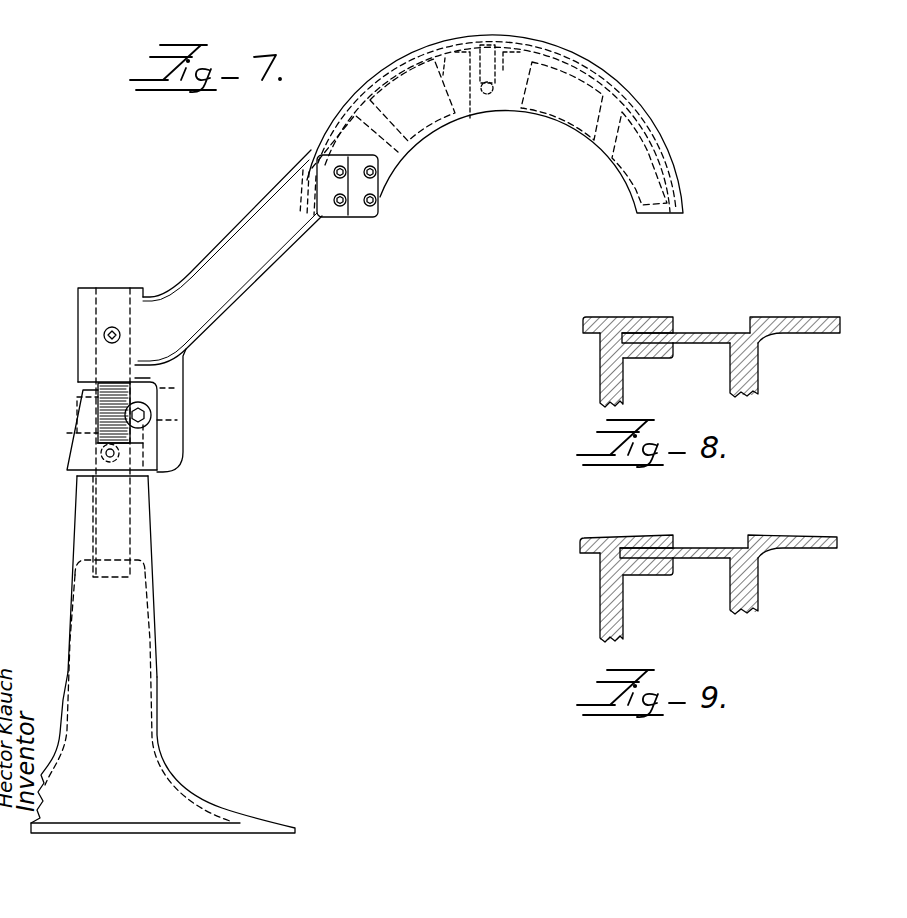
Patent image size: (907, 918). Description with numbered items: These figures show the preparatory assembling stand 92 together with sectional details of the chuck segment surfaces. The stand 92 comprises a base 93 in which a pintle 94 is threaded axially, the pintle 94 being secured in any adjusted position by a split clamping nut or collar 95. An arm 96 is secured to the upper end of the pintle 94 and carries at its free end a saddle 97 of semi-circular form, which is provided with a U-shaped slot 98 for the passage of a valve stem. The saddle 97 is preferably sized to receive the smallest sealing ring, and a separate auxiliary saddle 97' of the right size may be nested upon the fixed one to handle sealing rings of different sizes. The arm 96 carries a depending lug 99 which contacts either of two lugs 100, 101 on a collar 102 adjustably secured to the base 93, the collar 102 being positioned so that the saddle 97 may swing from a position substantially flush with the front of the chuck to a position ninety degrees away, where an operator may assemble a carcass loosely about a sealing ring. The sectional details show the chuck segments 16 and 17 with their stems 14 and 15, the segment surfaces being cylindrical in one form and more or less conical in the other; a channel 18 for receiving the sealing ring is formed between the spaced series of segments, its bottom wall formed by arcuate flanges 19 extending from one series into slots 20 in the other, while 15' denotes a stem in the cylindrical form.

In FIG. 8, the stem 14 is at (607, 378).
In FIG. 9, the stem 14 is at (604, 606).
In FIG. 9, the stem 15 is at (765, 586).
In FIG. 8, the right leg of rail section 15' is at (766, 370).
In FIG. 8, the chuck segment 16 is at (583, 324).
In FIG. 9, the chuck segment 16 is at (580, 552).
In FIG. 8, the chuck segment 17 is at (840, 325).
In FIG. 9, the chuck segment 17 is at (837, 547).
In FIG. 8, the channel 18 is at (703, 328).
In FIG. 9, the channel 18 is at (685, 540).
In FIG. 8, the arcuate flange 19 is at (689, 344).
In FIG. 9, the arcuate flange 19 is at (686, 560).
In FIG. 8, the slot 20 is at (643, 332).
In FIG. 9, the slot 20 is at (642, 548).
In FIG. 7, the preparatory assembling stand 92 is at (133, 598).
In FIG. 7, the base 93 is at (143, 543).
In FIG. 7, the pintle 94 is at (133, 510).
In FIG. 7, the split clamping nut or collar 95 is at (150, 410).
In FIG. 7, the arm 96 is at (260, 255).
In FIG. 7, the saddle 97 is at (495, 124).
In FIG. 7, the auxiliary saddle 97' is at (494, 123).
In FIG. 7, the U-shaped slot 98 is at (470, 67).
In FIG. 7, the depending lug 99 is at (175, 372).
In FIG. 7, the lug 100 is at (82, 402).
In FIG. 7, the lug 101 is at (177, 433).
In FIG. 7, the collar 102 is at (117, 472).